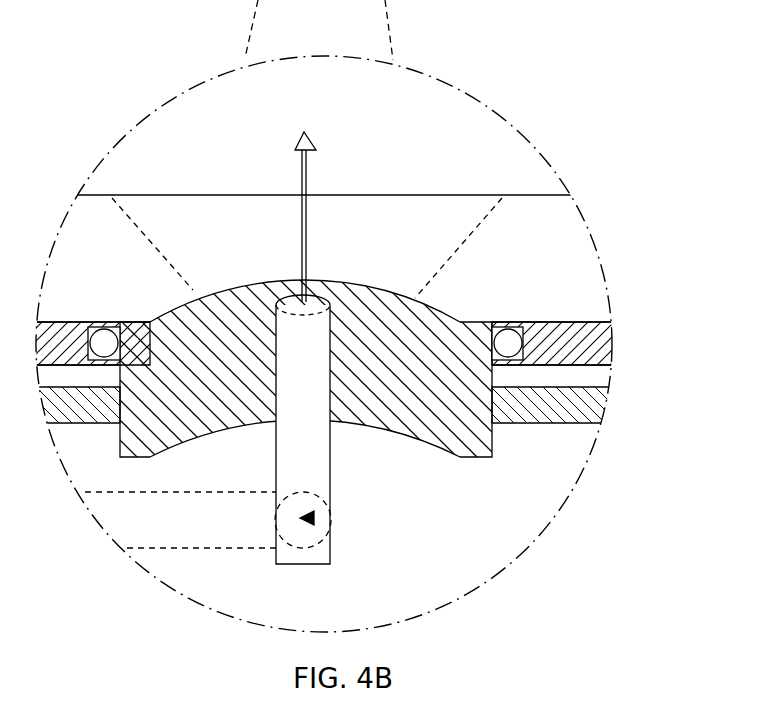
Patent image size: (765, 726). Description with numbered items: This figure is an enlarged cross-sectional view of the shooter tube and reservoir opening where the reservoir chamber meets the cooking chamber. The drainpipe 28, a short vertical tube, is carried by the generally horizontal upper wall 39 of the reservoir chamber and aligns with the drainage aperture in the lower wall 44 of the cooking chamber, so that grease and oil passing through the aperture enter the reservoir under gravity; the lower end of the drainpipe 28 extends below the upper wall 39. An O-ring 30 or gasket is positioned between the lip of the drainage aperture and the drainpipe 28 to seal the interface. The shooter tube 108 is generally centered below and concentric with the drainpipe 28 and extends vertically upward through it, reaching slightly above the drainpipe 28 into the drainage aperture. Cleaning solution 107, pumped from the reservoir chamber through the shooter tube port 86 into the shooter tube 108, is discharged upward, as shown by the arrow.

The drainpipe 28 is at (423, 437).
The O-ring 30 is at (108, 340).
The upper wall 39 is at (590, 407).
The lower wall 44 is at (397, 254).
The shooter tube port 86 is at (313, 518).
The cleaning solution 107 is at (307, 172).
The shooter tube 108 is at (305, 463).